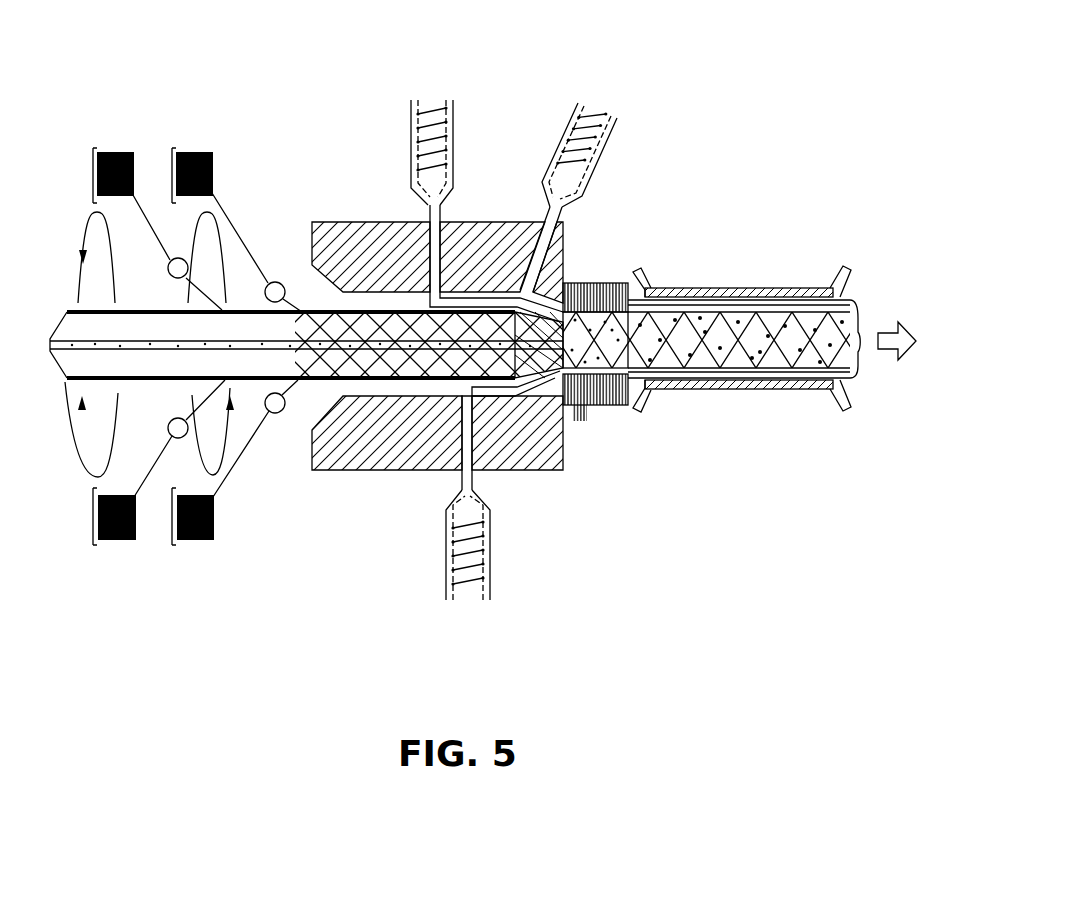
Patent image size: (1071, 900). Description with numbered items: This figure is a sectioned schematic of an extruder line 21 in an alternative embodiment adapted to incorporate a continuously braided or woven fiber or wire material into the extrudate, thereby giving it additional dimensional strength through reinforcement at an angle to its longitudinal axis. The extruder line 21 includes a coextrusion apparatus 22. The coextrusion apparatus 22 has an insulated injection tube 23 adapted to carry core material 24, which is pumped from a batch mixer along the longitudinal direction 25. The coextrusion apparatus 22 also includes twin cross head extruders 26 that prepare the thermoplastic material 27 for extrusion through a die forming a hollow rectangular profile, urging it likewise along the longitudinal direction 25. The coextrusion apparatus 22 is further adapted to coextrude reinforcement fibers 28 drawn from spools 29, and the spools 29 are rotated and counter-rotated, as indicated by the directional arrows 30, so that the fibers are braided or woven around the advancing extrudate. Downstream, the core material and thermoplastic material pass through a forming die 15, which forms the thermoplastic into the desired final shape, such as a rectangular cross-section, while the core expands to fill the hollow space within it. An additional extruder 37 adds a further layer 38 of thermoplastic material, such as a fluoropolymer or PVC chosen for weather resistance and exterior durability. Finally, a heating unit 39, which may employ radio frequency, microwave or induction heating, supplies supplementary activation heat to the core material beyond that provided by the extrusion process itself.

The forming die 15 is at (567, 290).
The extruder line 21 is at (669, 92).
The coextrusion apparatus 22 is at (508, 124).
The insulated injection tube 23 is at (310, 310).
The core material 24 is at (72, 352).
The longitudinal direction 25 is at (902, 358).
The twin cross head extruders 26 is at (458, 111).
The thermoplastic material 27 is at (413, 181).
The reinforcement fibers 28 is at (232, 475).
The spools 29 is at (206, 150).
The directional arrows 30 is at (83, 258).
The extruder 37 is at (613, 144).
The layer 38 is at (840, 295).
The heating unit 39 is at (599, 407).